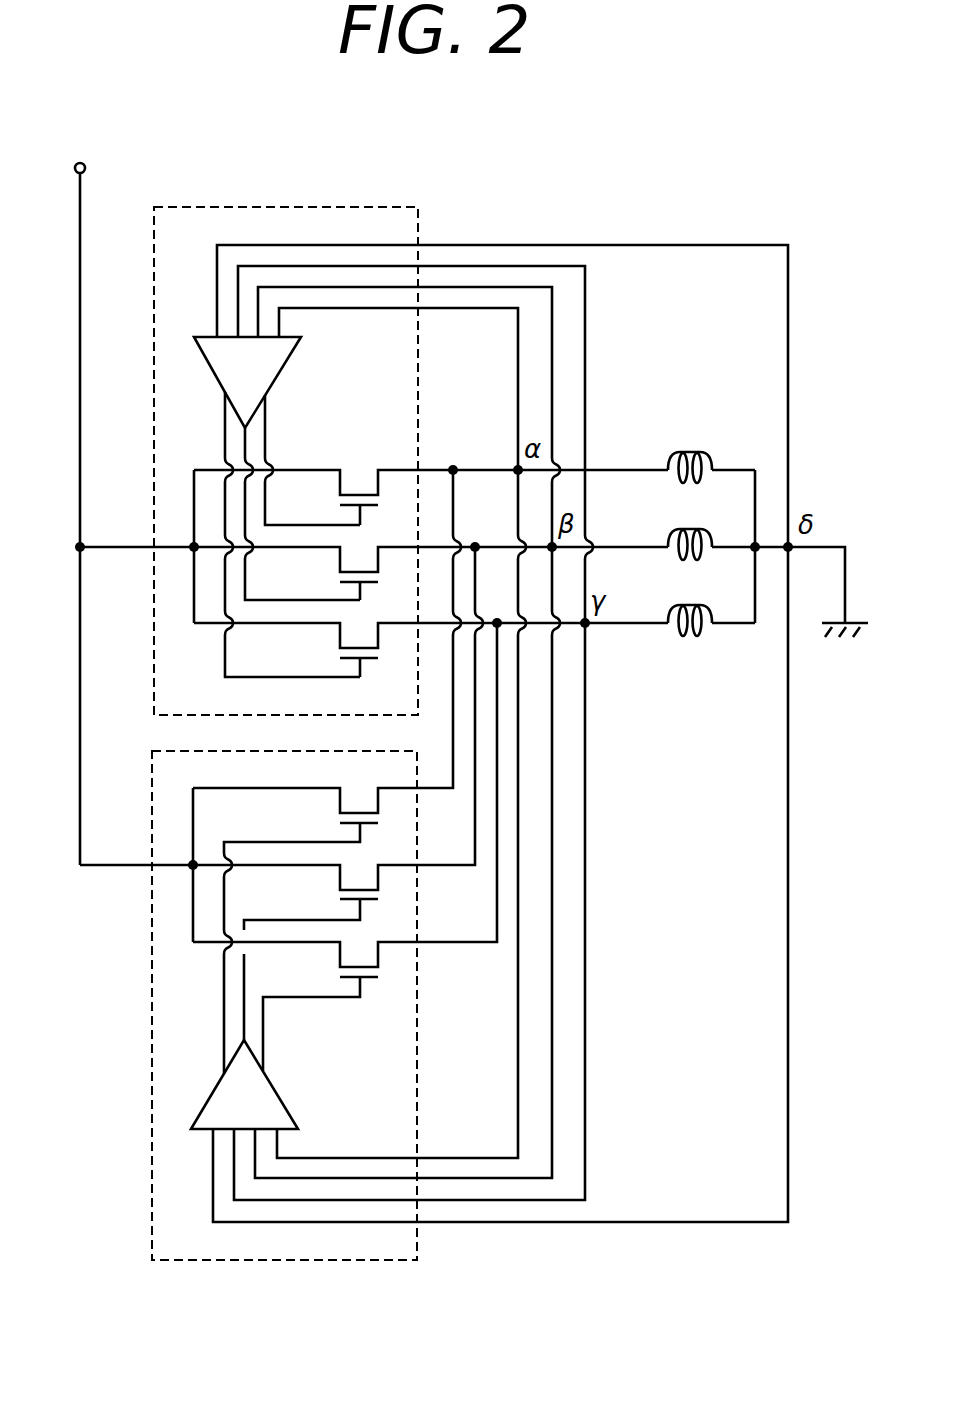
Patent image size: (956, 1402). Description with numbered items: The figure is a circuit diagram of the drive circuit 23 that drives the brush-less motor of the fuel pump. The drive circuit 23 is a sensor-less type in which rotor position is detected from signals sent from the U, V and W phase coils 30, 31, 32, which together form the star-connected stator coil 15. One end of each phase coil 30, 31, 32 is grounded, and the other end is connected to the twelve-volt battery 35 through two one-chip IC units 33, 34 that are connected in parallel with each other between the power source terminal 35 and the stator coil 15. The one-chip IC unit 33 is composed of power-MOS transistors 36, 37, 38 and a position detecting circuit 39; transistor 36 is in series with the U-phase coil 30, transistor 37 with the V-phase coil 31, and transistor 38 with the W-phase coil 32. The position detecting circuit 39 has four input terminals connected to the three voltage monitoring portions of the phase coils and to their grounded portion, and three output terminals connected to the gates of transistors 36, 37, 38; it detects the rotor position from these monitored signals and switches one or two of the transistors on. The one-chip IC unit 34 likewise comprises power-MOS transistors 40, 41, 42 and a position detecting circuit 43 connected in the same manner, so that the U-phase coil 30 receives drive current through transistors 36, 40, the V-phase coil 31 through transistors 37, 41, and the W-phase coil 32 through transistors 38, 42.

The stator coil 15 is at (754, 481).
The drive circuit 23 is at (531, 183).
The U-phase coil 30 is at (706, 452).
The V-phase coil 31 is at (706, 529).
The W-phase coil 32 is at (706, 606).
The one-chip IC unit 33 is at (352, 206).
The one-chip IC unit 34 is at (352, 1260).
The battery 35 is at (86, 168).
The power-MOS transistor 36 is at (379, 483).
The power-MOS transistor 37 is at (340, 560).
The power-MOS transistor 38 is at (340, 636).
The position detecting circuit 39 is at (286, 366).
The power-MOS transistor 40 is at (340, 800).
The power-MOS transistor 41 is at (340, 877).
The power-MOS transistor 42 is at (340, 953).
The position detecting circuit 43 is at (276, 1090).